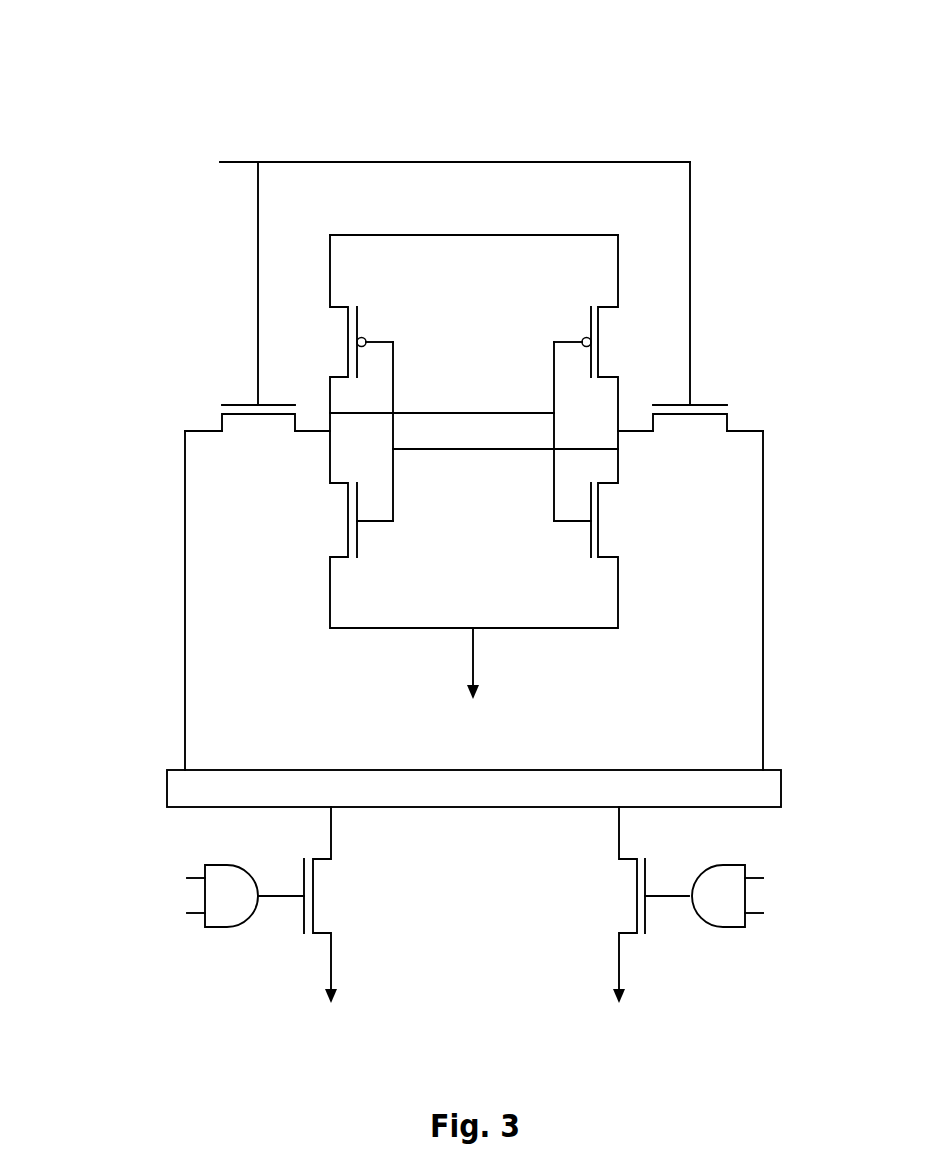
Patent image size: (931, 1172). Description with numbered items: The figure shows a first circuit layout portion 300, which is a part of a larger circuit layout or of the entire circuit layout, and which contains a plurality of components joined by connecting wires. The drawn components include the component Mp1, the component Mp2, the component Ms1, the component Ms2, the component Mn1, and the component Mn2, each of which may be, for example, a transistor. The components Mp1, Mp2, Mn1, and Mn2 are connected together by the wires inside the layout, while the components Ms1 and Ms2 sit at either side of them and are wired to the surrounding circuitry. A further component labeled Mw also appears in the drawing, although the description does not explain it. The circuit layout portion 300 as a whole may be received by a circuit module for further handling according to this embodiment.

The first circuit layout portion 300 is at (108, 50).
The component Mp1 is at (347, 342).
The component Mp2 is at (602, 342).
The component Mn1 is at (347, 520).
The component Mn2 is at (602, 520).
The component Ms1 is at (258, 426).
The component Ms2 is at (690, 426).
The write transistor Mw is at (308, 905).